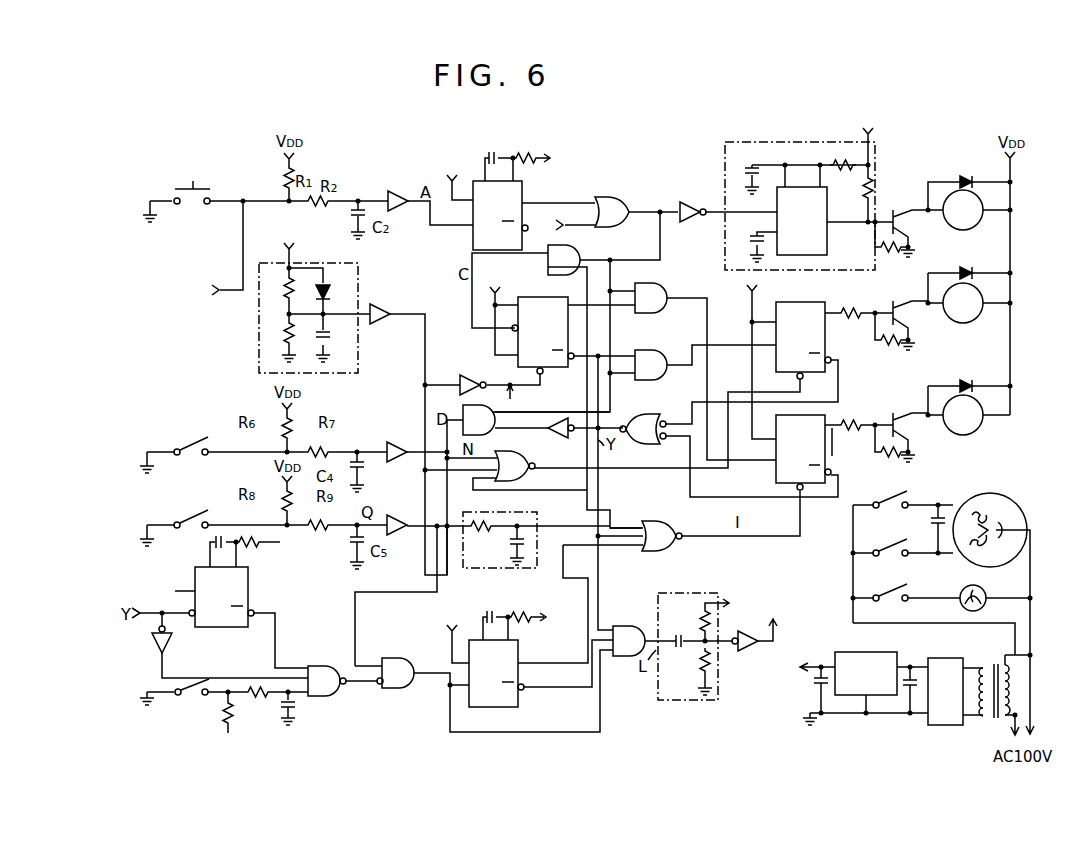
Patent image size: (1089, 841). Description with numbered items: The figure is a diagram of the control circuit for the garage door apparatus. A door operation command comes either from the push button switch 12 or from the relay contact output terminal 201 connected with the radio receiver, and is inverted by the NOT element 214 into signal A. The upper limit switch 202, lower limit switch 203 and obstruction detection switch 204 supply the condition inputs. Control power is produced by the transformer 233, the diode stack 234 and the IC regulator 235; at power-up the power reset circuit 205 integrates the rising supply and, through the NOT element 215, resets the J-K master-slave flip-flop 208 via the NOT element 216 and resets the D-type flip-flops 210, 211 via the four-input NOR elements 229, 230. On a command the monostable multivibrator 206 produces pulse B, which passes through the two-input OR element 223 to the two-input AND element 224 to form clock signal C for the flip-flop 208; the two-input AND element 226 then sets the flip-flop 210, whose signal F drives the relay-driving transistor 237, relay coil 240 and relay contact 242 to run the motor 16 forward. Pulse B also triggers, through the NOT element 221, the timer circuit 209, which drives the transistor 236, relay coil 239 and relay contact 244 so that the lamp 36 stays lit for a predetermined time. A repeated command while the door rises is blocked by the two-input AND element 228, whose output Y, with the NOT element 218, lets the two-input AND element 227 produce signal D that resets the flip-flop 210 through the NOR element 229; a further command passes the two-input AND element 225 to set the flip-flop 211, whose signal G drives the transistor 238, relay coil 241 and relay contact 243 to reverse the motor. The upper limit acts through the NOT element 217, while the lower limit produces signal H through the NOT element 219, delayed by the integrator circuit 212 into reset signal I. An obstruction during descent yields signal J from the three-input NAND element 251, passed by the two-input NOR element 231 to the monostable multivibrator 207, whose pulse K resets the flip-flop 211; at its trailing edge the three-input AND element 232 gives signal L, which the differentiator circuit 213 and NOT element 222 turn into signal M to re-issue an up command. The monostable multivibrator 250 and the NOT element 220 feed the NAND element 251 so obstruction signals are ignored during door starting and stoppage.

The push button switch 12 is at (178, 195).
The relay contact output terminal 201 is at (202, 273).
The upper limit switch 202 is at (162, 444).
The lower limit switch 203 is at (162, 514).
The obstruction detection switch 204 is at (170, 717).
The power reset circuit 205 is at (259, 324).
The monostable multivibrator 206 is at (522, 193).
The monostable multivibrator 207 is at (520, 707).
The J-K master-slave flip-flop 208 is at (552, 378).
The timer circuit 209 is at (746, 142).
The D-type flip-flop 210 is at (824, 299).
The D-type flip-flop 211 is at (824, 421).
The integrator circuit 212 is at (522, 516).
The differentiator circuit 213 is at (670, 714).
The NOT element 214 is at (402, 197).
The NOT element 215 is at (387, 312).
The NOT element 216 is at (475, 380).
The NOT element 217 is at (395, 440).
The NOT element 218 is at (555, 432).
The NOT element 219 is at (395, 514).
The NOT element 220 is at (152, 642).
The NOT element 221 is at (684, 200).
The NOT element 222 is at (752, 664).
The 2-input OR element 223 is at (608, 203).
The 2-input AND element 224 is at (562, 246).
The 2-input AND element 225 is at (674, 286).
The 2-input AND element 226 is at (674, 351).
The 2-input AND element 227 is at (490, 433).
The 2-input AND element 228 is at (646, 414).
The 4-input NOR element 229 is at (534, 479).
The 4-input NOR element 230 is at (676, 526).
The 2-input NOR element 231 is at (388, 665).
The 3-input AND element 232 is at (628, 626).
The transformer 233 is at (994, 658).
The diode stack 234 is at (946, 658).
The IC regulator 235 is at (846, 652).
The relay-driving transistor 236 is at (896, 212).
The relay-driving transistor 237 is at (880, 308).
The relay-driving transistor 238 is at (884, 420).
The relay coil 239 is at (990, 223).
The relay coil 240 is at (990, 316).
The relay coil 241 is at (980, 426).
The relay contact 242 is at (896, 504).
The relay contact 243 is at (900, 562).
The relay contact 244 is at (900, 606).
The monostable multivibrator 250 is at (248, 592).
The 3-input NAND element 251 is at (338, 695).
The motor 16 is at (1018, 502).
The lamp 36 is at (986, 608).